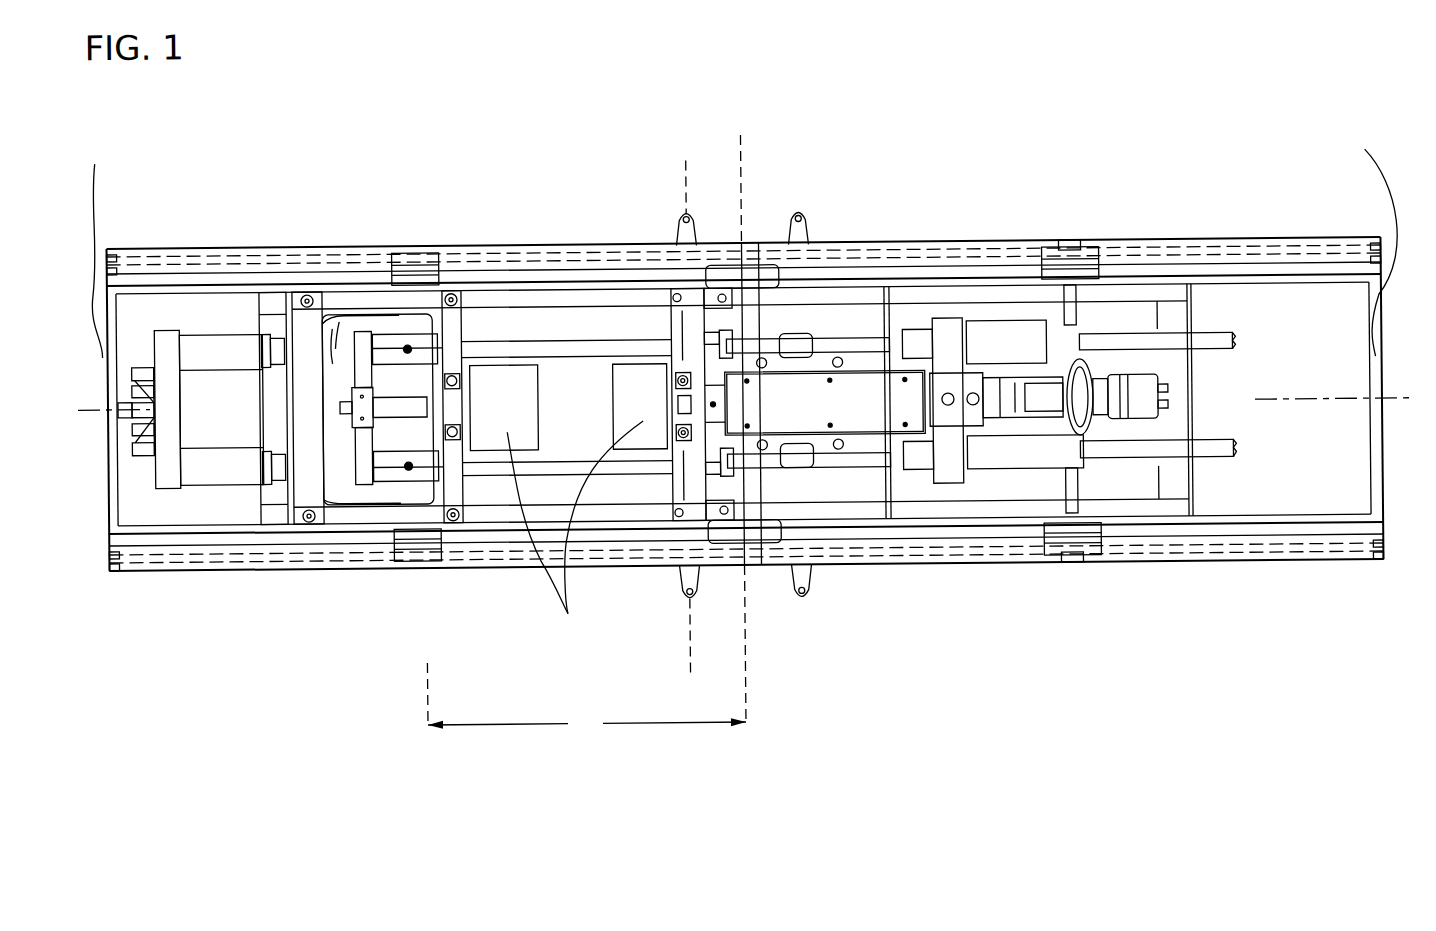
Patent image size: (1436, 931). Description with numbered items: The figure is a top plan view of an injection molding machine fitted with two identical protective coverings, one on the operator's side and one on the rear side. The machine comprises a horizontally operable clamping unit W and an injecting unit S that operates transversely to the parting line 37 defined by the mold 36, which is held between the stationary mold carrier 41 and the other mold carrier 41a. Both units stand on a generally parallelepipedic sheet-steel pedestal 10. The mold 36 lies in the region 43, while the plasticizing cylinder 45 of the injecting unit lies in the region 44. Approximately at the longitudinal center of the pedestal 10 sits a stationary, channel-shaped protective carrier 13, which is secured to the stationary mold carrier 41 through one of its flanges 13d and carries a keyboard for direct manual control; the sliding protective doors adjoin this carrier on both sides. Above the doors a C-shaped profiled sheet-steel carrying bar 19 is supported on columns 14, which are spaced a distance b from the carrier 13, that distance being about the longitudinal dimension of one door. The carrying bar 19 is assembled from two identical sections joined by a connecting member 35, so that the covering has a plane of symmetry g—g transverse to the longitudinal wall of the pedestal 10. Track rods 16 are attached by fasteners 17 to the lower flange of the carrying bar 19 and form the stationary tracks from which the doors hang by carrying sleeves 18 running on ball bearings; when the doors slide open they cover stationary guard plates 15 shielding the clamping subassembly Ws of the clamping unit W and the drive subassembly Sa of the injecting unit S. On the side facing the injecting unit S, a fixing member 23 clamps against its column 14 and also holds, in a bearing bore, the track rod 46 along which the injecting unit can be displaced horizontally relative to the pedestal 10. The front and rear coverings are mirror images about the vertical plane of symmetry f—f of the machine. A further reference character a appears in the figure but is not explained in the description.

The pedestal 10 is at (852, 508).
The protective carrier 13 is at (752, 243).
The flanges of the protective carrier 13d is at (812, 243).
The columns 14 is at (455, 243).
The stationary guard plates 15 is at (741, 242).
The track rods 16 is at (252, 243).
The fasteners 17 is at (112, 243).
The carrying sleeves 18 is at (677, 570).
The profiled carrying bar 19 is at (315, 232).
The fixing member 23 is at (1072, 270).
The connecting member 35 is at (763, 243).
The mold 36 is at (741, 474).
The parting line 37 is at (600, 405).
The stationary mold carrier 41 is at (672, 460).
The mold carrier 41a is at (455, 355).
The region 43 is at (588, 322).
The region 44 is at (858, 322).
The plasticizing cylinder 45 is at (834, 418).
The track rod 46 is at (1074, 315).
The injecting unit S is at (955, 160).
The drive subassembly Sa is at (1030, 484).
The clamping unit W is at (405, 208).
The clamping subassembly Ws is at (260, 497).
The vertical plane of symmetry f is at (744, 402).
The plane of symmetry g is at (745, 412).
The lug axis a is at (690, 417).
The distance b is at (586, 699).